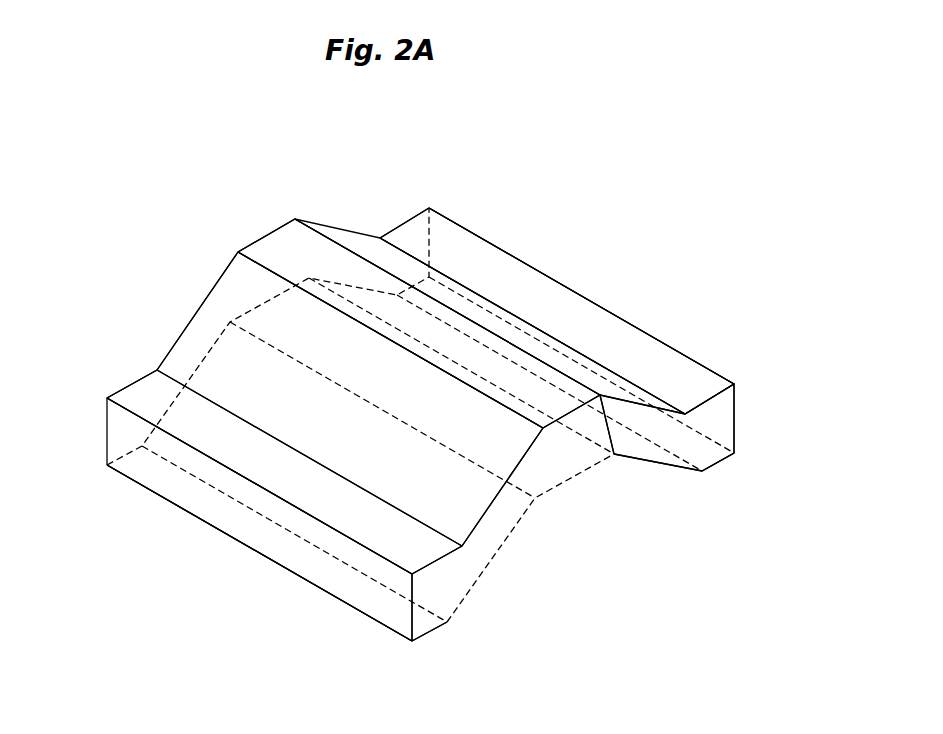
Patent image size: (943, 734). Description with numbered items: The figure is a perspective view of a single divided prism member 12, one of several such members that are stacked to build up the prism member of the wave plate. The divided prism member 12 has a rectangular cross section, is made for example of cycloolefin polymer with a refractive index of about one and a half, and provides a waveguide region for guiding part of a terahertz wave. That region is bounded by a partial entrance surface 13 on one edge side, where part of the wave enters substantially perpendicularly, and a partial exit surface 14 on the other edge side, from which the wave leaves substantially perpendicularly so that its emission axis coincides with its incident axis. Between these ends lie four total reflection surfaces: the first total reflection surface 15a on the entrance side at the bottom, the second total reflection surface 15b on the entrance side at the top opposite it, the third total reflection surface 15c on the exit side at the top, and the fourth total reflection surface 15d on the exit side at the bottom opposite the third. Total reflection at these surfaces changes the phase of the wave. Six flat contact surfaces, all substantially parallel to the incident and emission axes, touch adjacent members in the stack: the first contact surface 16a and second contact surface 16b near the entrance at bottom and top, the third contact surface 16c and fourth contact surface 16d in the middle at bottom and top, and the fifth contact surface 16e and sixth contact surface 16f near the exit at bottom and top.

The divided prism member 12 is at (532, 200).
The partial entrance surface 13 is at (353, 583).
The partial exit surface 14 is at (647, 353).
The first total reflection surface 15a is at (467, 553).
The second total reflection surface 15b is at (237, 282).
The third total reflection surface 15c is at (362, 240).
The fourth total reflection surface 15d is at (627, 443).
The first contact surface 16a is at (388, 605).
The second contact surface 16b is at (137, 385).
The third contact surface 16c is at (545, 463).
The fourth contact surface 16d is at (282, 240).
The fifth contact surface 16e is at (695, 450).
The sixth contact surface 16f is at (592, 323).